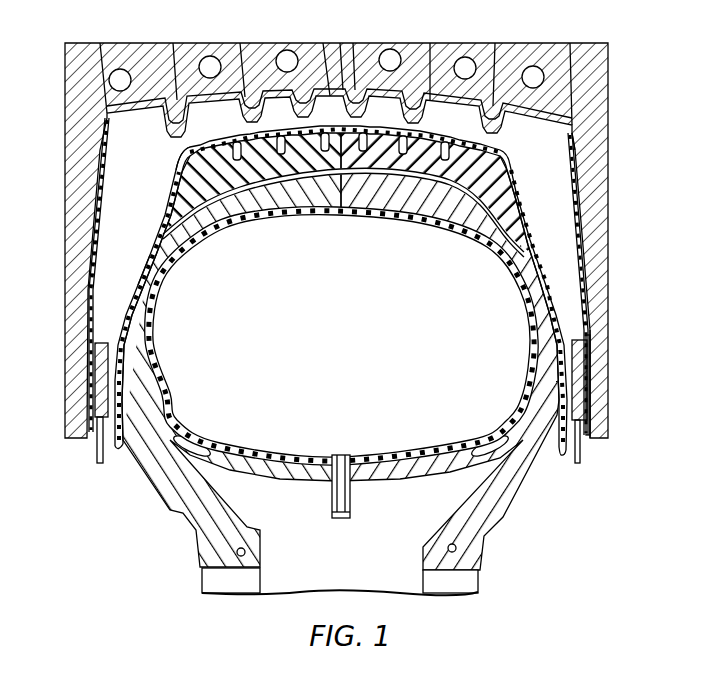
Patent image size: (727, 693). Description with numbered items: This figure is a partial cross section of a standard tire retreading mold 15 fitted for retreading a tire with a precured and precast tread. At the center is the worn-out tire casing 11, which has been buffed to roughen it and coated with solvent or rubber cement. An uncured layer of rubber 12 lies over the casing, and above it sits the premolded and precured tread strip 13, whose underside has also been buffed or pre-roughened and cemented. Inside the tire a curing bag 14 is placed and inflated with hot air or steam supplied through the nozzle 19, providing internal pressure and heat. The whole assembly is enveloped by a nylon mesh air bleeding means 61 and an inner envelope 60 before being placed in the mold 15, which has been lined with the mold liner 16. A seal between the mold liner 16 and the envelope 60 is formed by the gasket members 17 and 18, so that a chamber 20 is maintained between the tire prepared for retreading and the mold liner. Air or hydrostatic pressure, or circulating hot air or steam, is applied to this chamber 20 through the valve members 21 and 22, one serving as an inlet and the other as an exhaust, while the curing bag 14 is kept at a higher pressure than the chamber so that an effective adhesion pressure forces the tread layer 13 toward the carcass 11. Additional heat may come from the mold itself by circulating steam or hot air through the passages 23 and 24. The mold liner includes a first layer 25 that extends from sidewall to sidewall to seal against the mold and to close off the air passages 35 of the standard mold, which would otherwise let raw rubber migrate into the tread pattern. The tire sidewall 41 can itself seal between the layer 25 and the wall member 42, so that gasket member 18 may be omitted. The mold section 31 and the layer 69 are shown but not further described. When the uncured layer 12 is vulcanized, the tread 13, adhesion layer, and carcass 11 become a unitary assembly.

The tire casing 11 is at (340, 350).
The uncured layer of rubber 12 is at (512, 230).
The tread strip 13 is at (478, 190).
The curing bag 14 is at (340, 340).
The tire retreading mold 15 is at (353, 222).
The mold liner 16 is at (580, 113).
The gasket member 17 is at (100, 390).
The gasket member 18 is at (575, 390).
The nozzle 19 is at (350, 500).
The chamber 20 is at (117, 249).
The valve member 21 is at (100, 463).
The valve member 22 is at (578, 463).
The passage 23 is at (243, 60).
The passage 24 is at (395, 47).
The first layer 25 is at (588, 300).
The tread ring segment 31 is at (346, 62).
The air passages 35 is at (105, 60).
The tire sidewall 41 is at (565, 336).
The wall member 42 is at (604, 313).
The inner envelope 60 is at (153, 262).
The nylon mesh air bleeding means 61 is at (176, 168).
The membrane layer 69 is at (164, 232).